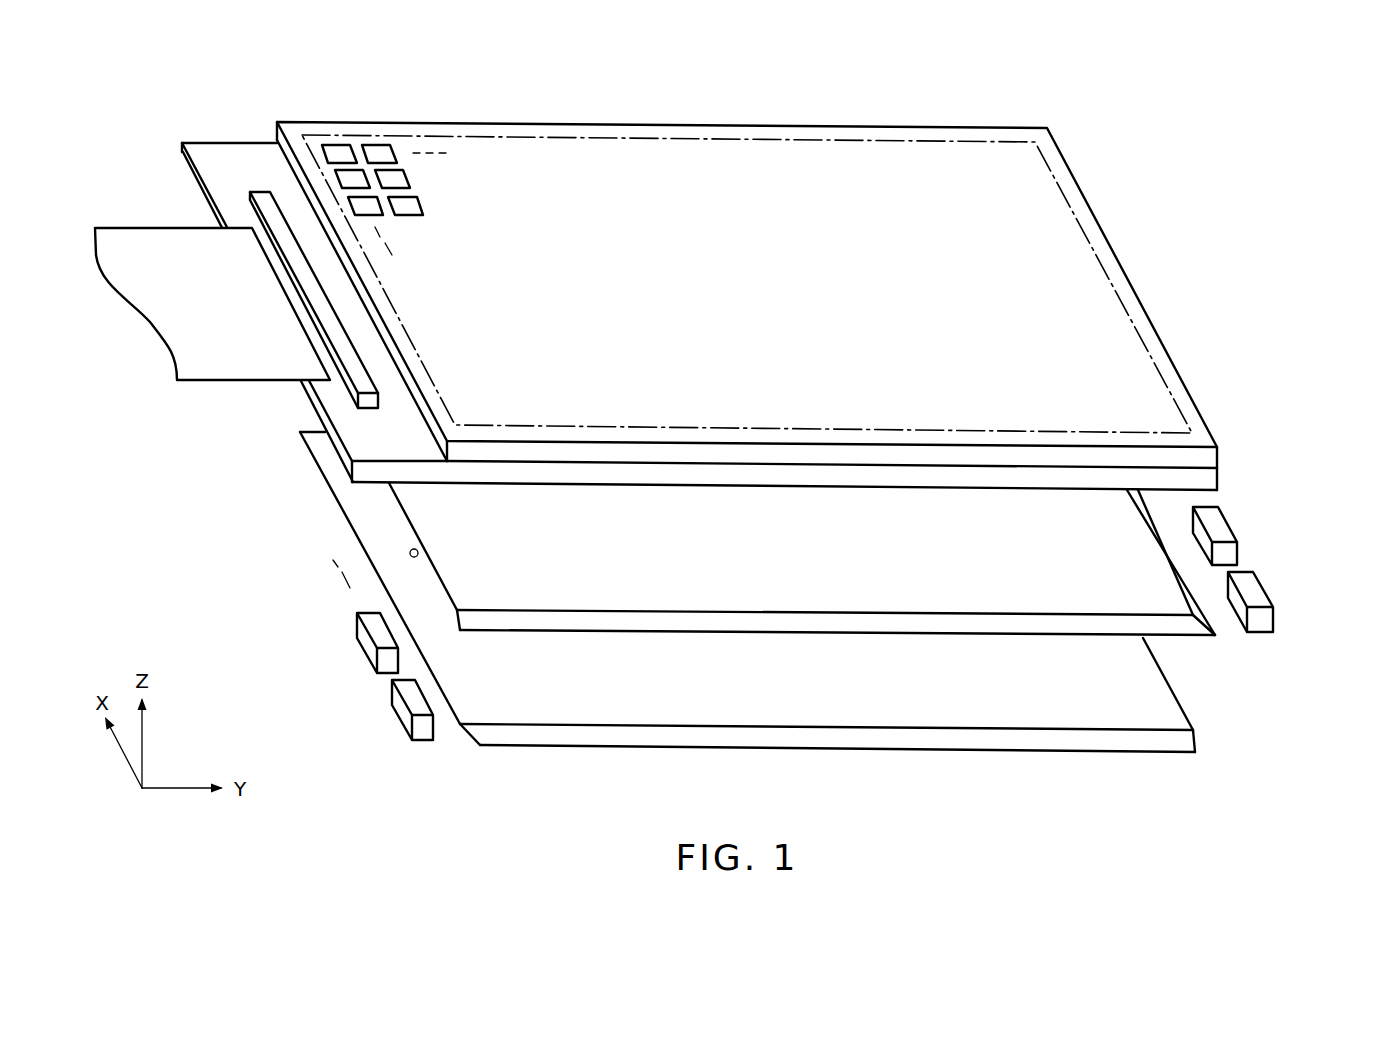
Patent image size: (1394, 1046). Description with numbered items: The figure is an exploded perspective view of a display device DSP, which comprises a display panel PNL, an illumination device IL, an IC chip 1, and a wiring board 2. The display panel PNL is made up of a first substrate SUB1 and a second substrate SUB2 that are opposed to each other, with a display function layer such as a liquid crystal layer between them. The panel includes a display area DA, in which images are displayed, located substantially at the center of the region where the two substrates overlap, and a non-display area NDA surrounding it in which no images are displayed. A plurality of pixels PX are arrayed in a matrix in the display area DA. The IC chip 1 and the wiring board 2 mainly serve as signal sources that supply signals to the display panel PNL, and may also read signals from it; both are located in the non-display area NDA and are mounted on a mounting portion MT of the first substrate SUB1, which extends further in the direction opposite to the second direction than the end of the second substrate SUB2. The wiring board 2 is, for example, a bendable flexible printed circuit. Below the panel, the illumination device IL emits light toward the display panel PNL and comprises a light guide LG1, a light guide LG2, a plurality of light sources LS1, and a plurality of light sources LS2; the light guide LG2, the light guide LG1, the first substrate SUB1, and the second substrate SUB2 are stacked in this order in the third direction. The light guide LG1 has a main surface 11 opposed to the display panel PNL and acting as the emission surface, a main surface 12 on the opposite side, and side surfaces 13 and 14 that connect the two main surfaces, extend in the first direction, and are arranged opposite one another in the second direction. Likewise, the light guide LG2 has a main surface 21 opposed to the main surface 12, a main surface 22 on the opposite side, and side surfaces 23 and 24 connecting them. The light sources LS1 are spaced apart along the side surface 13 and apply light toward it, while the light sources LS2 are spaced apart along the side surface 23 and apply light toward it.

The display device DSP is at (735, 430).
The display panel PNL is at (763, 318).
The first substrate SUB1 is at (729, 318).
The second substrate SUB2 is at (791, 268).
The display area DA is at (617, 138).
The non-display area NDA is at (198, 107).
The pixels PX is at (383, 150).
The mounting portion MT is at (301, 228).
The IC chip 1 is at (265, 200).
The wiring board 2 is at (165, 240).
The illumination device IL is at (835, 622).
The light guide LG1 is at (838, 589).
The light guide LG2 is at (782, 622).
The light sources LS1 is at (1253, 573).
The light sources LS2 is at (393, 695).
The main surface 11 is at (845, 588).
The main surface 12 is at (802, 637).
The side surface 13 is at (1200, 603).
The side surface 14 is at (417, 550).
The main surface 21 is at (877, 708).
The main surface 22 is at (862, 753).
The side surface 23 is at (463, 737).
The side surface 24 is at (1203, 748).